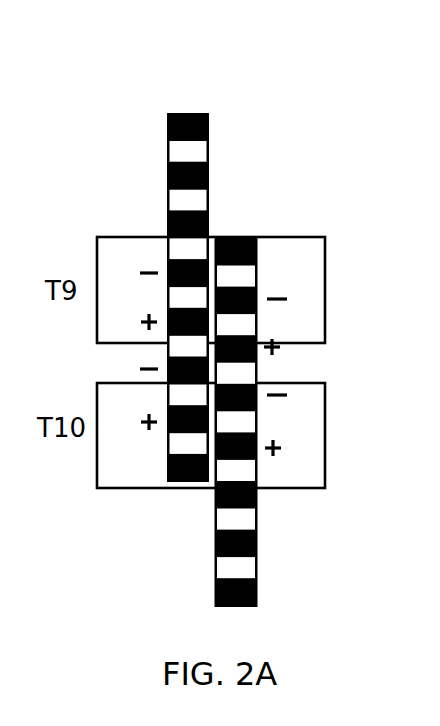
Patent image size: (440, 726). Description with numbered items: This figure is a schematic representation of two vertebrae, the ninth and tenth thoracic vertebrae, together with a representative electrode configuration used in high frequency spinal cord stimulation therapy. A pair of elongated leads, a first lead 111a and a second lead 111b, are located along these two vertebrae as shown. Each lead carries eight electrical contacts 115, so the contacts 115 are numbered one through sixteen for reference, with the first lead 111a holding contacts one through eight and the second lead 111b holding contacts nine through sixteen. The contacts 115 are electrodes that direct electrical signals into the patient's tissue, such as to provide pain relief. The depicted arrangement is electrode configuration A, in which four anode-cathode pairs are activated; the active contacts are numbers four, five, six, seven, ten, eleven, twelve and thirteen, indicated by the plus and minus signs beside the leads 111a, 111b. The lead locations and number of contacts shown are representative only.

The first lead 111a is at (197, 105).
The second lead 111b is at (256, 218).
The electrical contact 115 is at (209, 128).